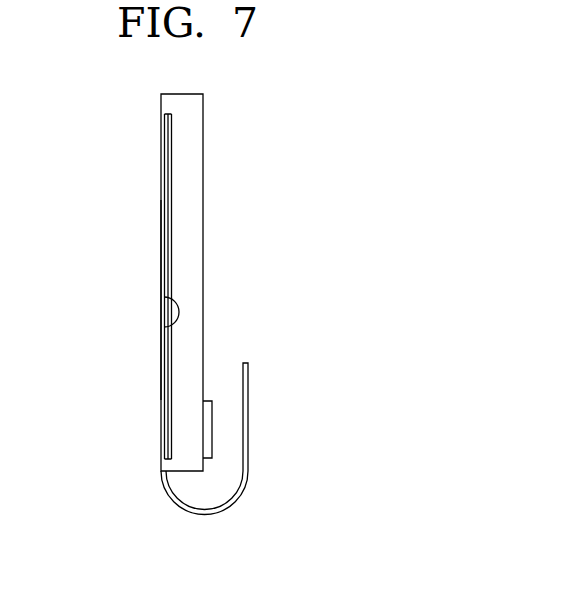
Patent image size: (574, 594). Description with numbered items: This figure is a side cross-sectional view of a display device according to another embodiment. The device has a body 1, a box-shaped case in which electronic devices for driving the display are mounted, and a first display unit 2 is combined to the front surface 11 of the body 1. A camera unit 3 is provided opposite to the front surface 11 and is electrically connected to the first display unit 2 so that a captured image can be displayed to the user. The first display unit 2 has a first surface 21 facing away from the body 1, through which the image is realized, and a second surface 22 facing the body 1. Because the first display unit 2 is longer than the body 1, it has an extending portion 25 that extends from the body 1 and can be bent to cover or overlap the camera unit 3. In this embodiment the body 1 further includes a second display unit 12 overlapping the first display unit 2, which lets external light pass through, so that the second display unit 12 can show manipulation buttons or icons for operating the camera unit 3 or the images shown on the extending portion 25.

The body 1 is at (203, 139).
The front surface 11 is at (164, 190).
The second display unit 12 is at (172, 254).
The first display unit 2 is at (161, 232).
The first surface 21 is at (161, 281).
The second surface 22 is at (172, 319).
The camera unit 3 is at (211, 401).
The extending portion 25 is at (244, 365).